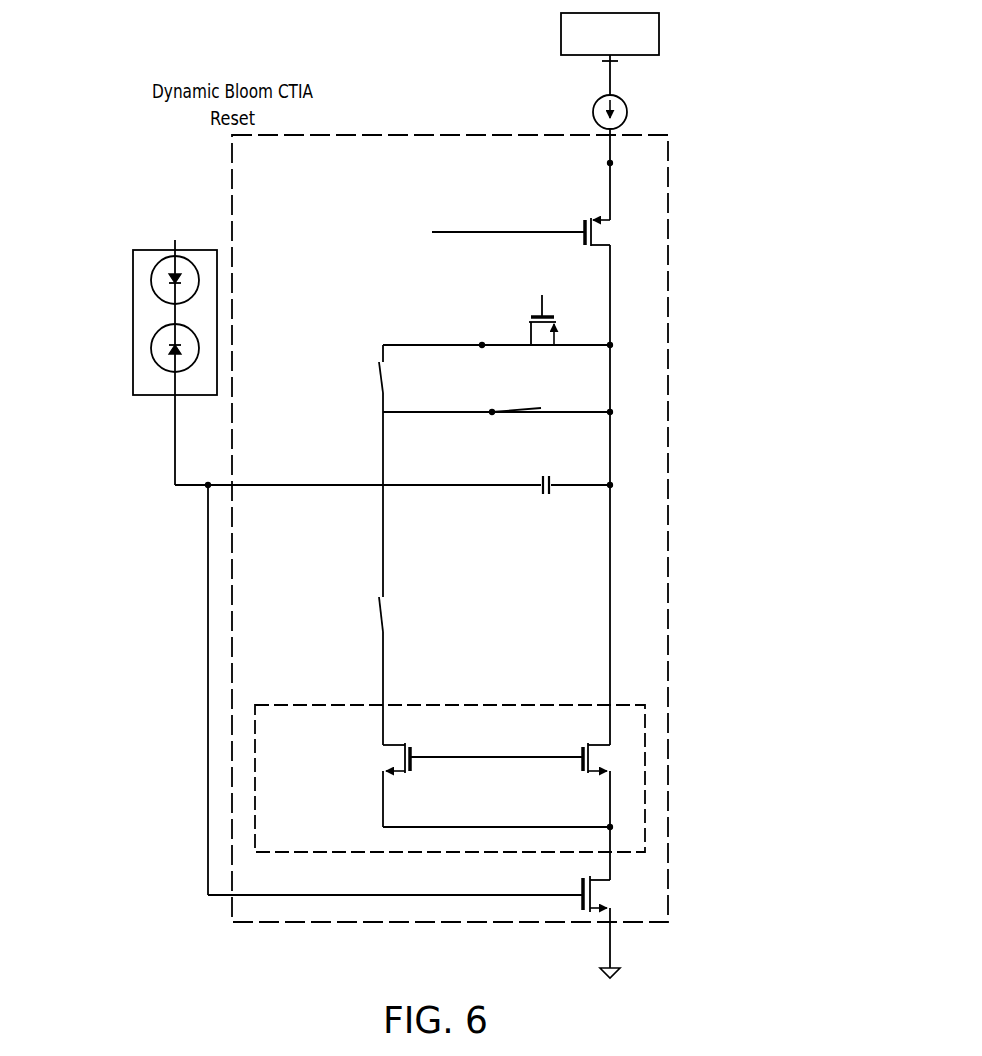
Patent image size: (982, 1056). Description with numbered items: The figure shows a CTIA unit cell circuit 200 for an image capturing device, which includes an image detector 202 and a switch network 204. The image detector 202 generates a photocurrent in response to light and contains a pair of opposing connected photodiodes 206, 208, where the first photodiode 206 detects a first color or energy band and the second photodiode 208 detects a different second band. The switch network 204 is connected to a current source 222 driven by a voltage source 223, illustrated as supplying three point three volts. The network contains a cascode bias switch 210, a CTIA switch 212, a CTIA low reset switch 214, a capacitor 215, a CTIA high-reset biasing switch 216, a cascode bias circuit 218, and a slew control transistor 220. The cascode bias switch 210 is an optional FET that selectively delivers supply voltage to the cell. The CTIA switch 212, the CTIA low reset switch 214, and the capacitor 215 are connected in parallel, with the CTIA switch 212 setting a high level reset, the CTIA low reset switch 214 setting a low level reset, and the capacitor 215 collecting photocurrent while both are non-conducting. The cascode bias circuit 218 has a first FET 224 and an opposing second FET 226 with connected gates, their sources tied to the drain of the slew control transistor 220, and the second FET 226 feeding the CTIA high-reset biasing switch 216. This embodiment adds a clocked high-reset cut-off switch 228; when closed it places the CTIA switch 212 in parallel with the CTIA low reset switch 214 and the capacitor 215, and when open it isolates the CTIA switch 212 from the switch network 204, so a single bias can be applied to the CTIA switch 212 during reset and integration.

The CTIA unit cell circuit 200 is at (764, 106).
The image detector 202 is at (128, 362).
The switch network 204 is at (458, 128).
The first photodiode 206 is at (153, 289).
The second photodiode 208 is at (153, 355).
The cascode bias switch 210 is at (589, 216).
The CTIA switch 212 is at (529, 322).
The CTIA low reset switch 214 is at (489, 411).
The capacitor 215 is at (541, 476).
The CTIA high-reset biasing switch 216 is at (386, 630).
The cascode bias circuit 218 is at (450, 736).
The slew control transistor 220 is at (582, 886).
The current source 222 is at (628, 110).
The voltage source 223 is at (661, 33).
The first FET 224 is at (586, 773).
The second FET 226 is at (407, 773).
The high-reset cut-off switch 228 is at (386, 393).